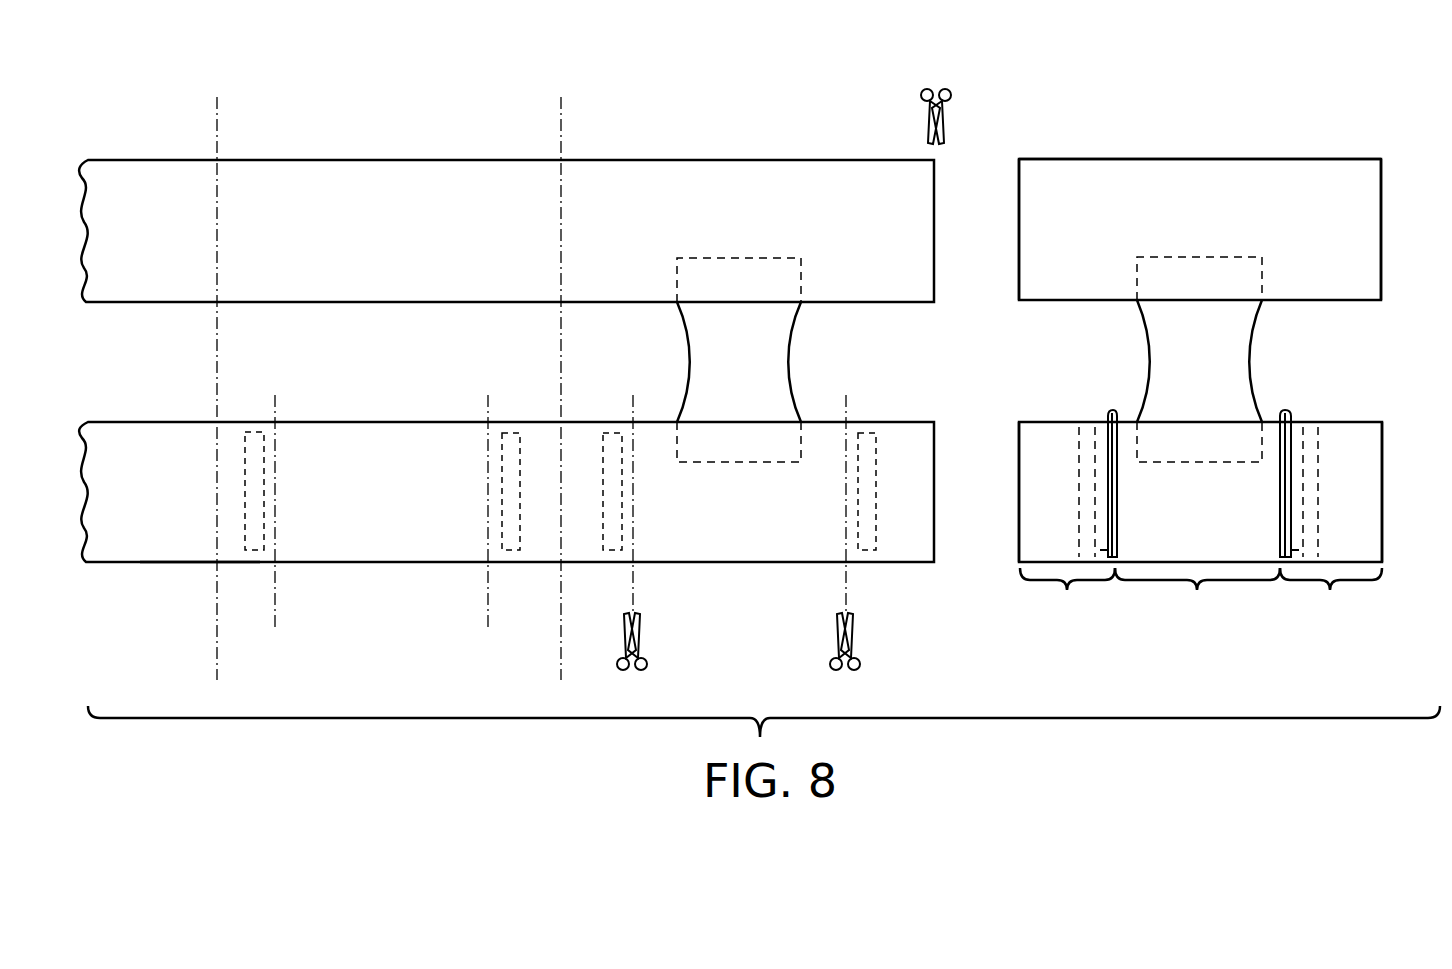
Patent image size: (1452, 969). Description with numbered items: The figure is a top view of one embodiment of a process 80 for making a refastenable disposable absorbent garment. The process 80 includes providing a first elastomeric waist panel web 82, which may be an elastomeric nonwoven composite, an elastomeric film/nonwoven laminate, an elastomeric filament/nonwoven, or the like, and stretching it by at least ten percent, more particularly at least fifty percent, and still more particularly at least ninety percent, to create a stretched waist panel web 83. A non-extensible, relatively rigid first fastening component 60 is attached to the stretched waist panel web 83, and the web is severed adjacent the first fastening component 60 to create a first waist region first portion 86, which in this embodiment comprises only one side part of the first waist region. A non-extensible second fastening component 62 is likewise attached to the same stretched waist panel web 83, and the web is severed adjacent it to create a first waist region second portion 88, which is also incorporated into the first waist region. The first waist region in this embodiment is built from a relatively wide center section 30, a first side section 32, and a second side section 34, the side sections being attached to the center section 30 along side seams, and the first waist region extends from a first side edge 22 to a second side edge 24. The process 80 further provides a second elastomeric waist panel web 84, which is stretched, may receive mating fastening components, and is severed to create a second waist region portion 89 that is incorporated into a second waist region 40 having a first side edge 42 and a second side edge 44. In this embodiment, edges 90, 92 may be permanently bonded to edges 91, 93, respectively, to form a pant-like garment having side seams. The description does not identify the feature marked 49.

The process 80 is at (427, 66).
The second elastomeric waist panel web 84 is at (282, 160).
The first elastomeric waist panel web 82 is at (122, 563).
The stretched waist panel web 83 is at (196, 563).
The neck connecting strips 49 is at (789, 360).
The center section 30 is at (1226, 159).
The second waist region portion 89 is at (1084, 159).
The edge 90 is at (1019, 222).
The edge 92 is at (1381, 217).
The first side section 32 is at (1046, 422).
The second side section 34 is at (1348, 422).
The second waist region 40 is at (1197, 524).
The first waist region first portion 86 is at (1067, 597).
The first waist region second portion 88 is at (1331, 597).
The edge 91 is at (1019, 490).
The edge 93 is at (1382, 487).
The first side edge 22 is at (1105, 433).
The second side edge 24 is at (1296, 438).
The first side edge 42 is at (1079, 452).
The second side edge 44 is at (1318, 452).
The first fastening component 60 is at (1088, 522).
The second fastening component 62 is at (1308, 520).